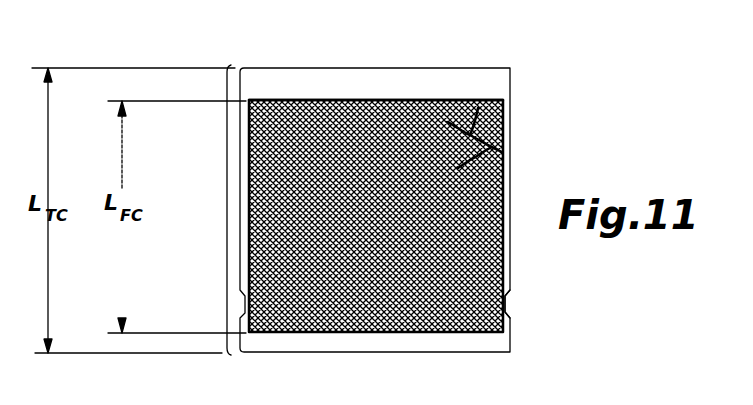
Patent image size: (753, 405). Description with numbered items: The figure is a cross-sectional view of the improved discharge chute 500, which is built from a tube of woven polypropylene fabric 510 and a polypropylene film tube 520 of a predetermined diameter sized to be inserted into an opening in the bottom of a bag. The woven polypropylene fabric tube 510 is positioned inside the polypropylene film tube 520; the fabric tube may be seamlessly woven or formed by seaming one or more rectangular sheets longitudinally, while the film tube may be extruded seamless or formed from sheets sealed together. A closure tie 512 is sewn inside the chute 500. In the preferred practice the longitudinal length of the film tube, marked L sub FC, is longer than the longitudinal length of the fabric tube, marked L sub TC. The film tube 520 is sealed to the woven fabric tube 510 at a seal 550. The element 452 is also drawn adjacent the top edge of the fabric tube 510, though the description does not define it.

The electrolyte layer edge 452 is at (400, 100).
The discharge chute 500 is at (225, 213).
The woven polypropylene fabric tube 510 is at (478, 248).
The closure tie 512 is at (481, 103).
The polypropylene film tube 520 is at (512, 190).
The seal 550 is at (506, 303).